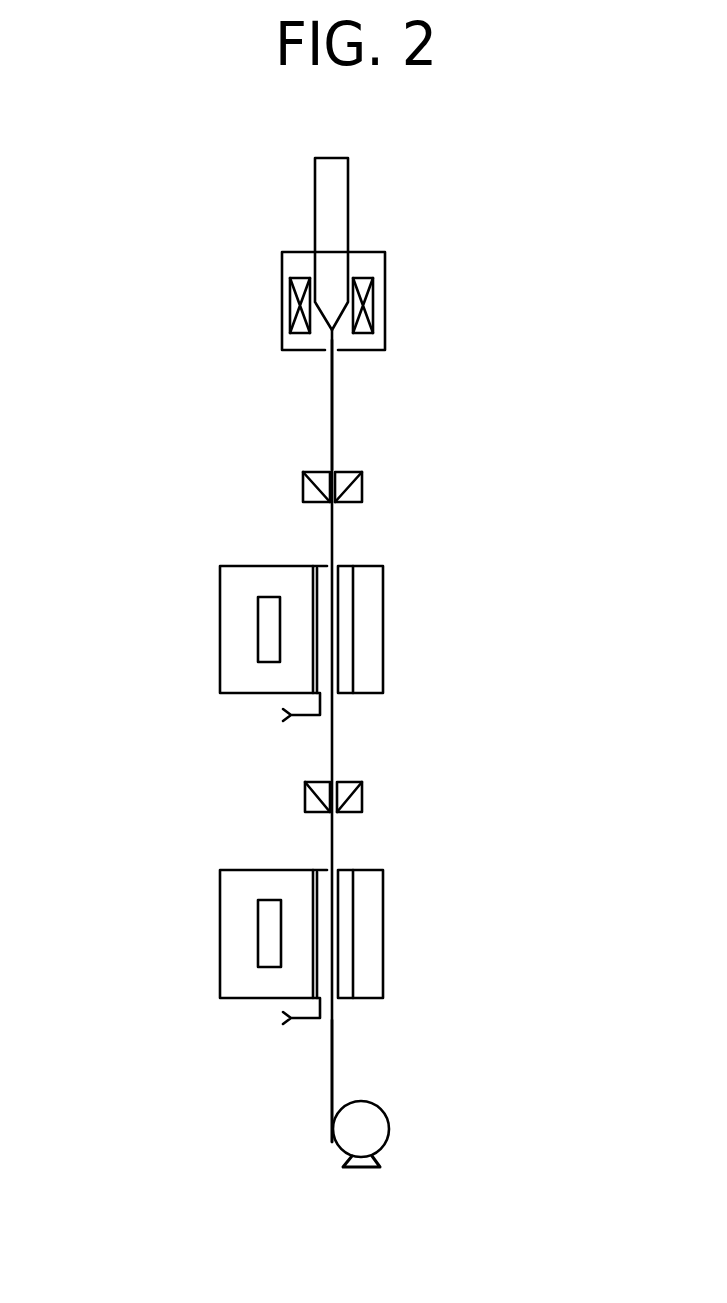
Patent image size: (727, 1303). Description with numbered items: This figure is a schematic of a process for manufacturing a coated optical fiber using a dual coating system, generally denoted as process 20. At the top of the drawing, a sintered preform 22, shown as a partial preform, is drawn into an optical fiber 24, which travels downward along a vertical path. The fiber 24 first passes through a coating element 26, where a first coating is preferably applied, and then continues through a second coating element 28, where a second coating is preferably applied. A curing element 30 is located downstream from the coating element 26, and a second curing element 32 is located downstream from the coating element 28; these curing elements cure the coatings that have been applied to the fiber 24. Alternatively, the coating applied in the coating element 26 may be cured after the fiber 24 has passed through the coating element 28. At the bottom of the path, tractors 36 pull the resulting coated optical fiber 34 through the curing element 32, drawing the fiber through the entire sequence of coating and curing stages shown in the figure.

The process for manufacturing a coated optical fiber 20 is at (207, 413).
The sintered preform 22 is at (348, 176).
The optical fiber 24 is at (333, 398).
The coating element 26 is at (362, 487).
The coating element 28 is at (362, 796).
The curing element 30 is at (353, 621).
The curing element 32 is at (353, 933).
The coated optical fiber 34 is at (333, 1060).
The tractors 36 is at (381, 1140).